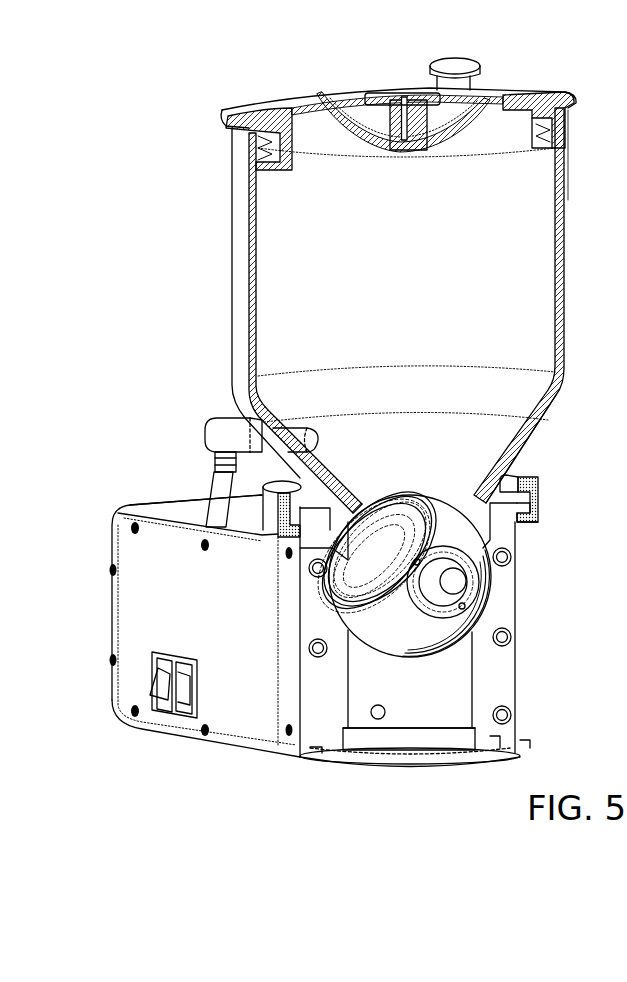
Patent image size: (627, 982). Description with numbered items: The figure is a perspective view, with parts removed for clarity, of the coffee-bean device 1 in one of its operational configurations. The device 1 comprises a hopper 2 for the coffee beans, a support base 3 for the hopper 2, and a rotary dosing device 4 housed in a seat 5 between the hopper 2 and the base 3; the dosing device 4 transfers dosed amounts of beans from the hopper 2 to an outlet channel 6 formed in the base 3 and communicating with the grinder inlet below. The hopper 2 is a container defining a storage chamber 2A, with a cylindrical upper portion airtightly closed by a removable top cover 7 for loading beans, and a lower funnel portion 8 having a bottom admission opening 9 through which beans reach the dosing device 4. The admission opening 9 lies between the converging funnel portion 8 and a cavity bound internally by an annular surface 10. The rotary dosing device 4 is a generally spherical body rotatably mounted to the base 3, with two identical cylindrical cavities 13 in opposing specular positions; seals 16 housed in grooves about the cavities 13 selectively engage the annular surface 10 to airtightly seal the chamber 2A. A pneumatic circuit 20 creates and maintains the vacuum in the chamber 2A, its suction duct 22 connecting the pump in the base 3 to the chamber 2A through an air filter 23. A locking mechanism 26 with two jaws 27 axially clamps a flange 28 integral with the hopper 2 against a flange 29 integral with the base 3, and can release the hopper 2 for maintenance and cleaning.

The device 1 is at (135, 142).
The hopper 2 is at (232, 305).
The storage chamber 2A is at (493, 271).
The support base 3 is at (120, 622).
The rotary dosing device 4 is at (370, 660).
The seat 5 is at (355, 627).
The outlet channel 6 is at (465, 692).
The top cover 7 is at (258, 108).
The lower funnel portion 8 is at (530, 457).
The admission opening 9 is at (352, 512).
The annular surface 10 is at (385, 520).
The cylindrical cavities 13 is at (347, 545).
The seals 16 is at (400, 655).
The pneumatic circuit 20 is at (200, 513).
The suction duct 22 is at (212, 490).
The air filter 23 is at (222, 422).
The locking mechanism 26 is at (545, 514).
The jaws 27 is at (526, 507).
The flange 28 is at (533, 493).
The flange 29 is at (522, 512).